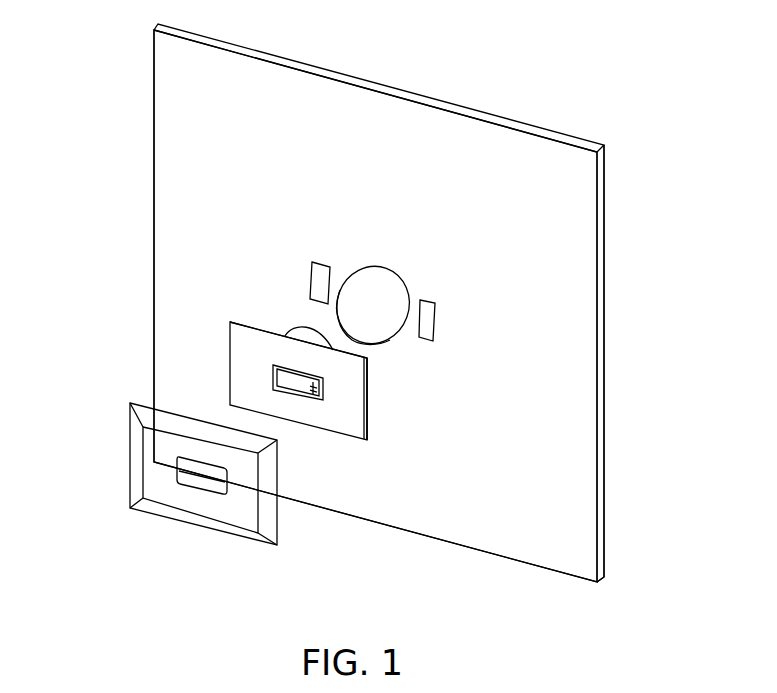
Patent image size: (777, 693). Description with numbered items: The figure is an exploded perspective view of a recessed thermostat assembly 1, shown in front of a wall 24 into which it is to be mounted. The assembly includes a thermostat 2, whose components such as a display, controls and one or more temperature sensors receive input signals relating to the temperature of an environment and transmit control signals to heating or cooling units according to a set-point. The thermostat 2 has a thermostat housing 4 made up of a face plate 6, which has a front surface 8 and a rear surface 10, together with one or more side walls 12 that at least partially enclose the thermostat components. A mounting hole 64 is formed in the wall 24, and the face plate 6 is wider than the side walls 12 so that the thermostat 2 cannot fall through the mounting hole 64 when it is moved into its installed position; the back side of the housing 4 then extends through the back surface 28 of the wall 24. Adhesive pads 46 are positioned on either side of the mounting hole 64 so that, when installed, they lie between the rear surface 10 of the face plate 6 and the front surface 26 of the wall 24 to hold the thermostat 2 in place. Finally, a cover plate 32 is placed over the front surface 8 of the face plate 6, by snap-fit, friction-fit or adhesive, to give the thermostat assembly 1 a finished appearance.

The recessed thermostat assembly 1 is at (204, 299).
The thermostat 2 is at (383, 416).
The thermostat housing 4 is at (218, 358).
The face plate 6 is at (333, 420).
The front surface 8 is at (367, 360).
The rear surface 10 is at (367, 393).
The side walls 12 is at (297, 331).
The wall 24 is at (630, 171).
The front surface of the wall 26 is at (480, 200).
The back surface of the wall 28 is at (603, 221).
The cover plate 32 is at (131, 456).
The adhesive pad 46 is at (312, 273).
The mounting hole 64 is at (375, 284).